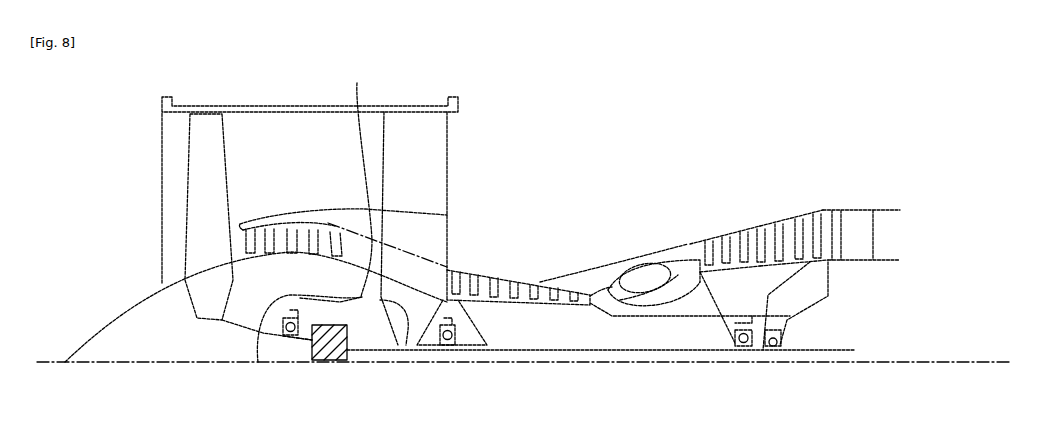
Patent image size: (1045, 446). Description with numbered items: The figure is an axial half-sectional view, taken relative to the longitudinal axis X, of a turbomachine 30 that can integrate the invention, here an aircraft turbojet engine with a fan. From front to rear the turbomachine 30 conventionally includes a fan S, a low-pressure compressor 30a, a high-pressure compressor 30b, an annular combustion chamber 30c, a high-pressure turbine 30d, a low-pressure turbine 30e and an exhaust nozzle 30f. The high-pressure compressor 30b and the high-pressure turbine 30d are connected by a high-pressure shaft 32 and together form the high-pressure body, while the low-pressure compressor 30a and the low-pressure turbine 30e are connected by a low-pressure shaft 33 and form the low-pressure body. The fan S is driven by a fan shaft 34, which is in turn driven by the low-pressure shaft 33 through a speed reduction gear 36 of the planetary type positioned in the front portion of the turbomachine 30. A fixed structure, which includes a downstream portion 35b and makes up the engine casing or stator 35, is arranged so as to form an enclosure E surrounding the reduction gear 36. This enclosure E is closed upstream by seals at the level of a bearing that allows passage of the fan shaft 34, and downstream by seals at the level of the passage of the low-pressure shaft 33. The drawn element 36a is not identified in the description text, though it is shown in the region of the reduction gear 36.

The turbomachine 30 is at (567, 202).
The low-pressure compressor 30a is at (267, 226).
The high-pressure compressor 30b is at (485, 278).
The annular combustion chamber 30c is at (648, 282).
The high-pressure turbine 30d is at (705, 256).
The low-pressure turbine 30e is at (827, 212).
The exhaust nozzle 30f is at (888, 238).
The high-pressure shaft 32 is at (665, 318).
The low-pressure shaft 33 is at (575, 350).
The fan shaft 34 is at (263, 333).
The engine casing or stator 35 is at (349, 206).
The downstream portion 35b is at (406, 345).
The speed reduction gear 36 is at (333, 345).
The hub cone 36a is at (258, 335).
The enclosure E is at (372, 318).
The fan S is at (205, 167).
The longitudinal axis X is at (97, 362).